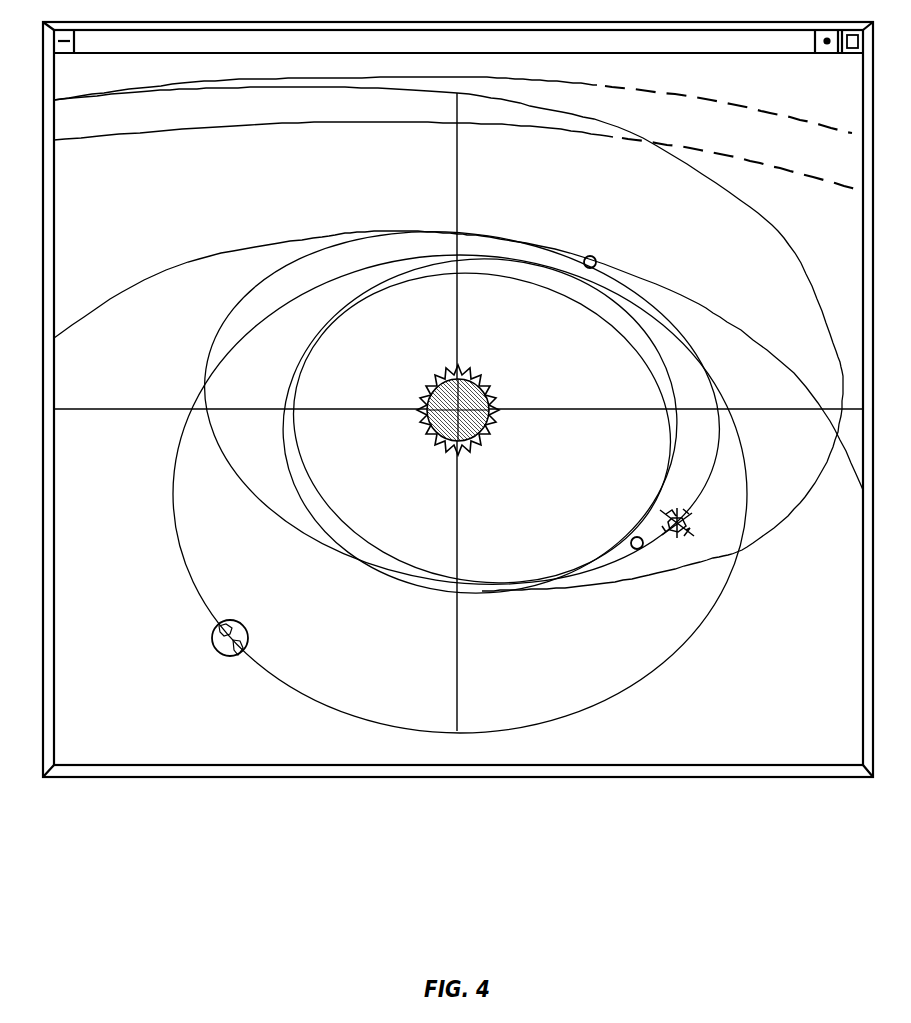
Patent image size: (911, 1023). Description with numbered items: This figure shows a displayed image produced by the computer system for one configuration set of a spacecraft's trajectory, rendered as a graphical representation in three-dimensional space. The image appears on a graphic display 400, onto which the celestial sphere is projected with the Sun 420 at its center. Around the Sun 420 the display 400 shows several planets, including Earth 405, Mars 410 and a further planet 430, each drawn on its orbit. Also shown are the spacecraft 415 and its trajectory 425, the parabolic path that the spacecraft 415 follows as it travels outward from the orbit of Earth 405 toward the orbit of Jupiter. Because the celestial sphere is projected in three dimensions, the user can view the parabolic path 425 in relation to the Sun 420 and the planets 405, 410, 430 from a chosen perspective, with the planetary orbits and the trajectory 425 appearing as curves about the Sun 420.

The graphic display 400 is at (851, 756).
The Earth 405 is at (272, 629).
The Mars 410 is at (620, 245).
The spacecraft 415 is at (683, 531).
The Sun 420 is at (522, 430).
The trajectory 425 is at (796, 253).
The planet 430 is at (632, 539).